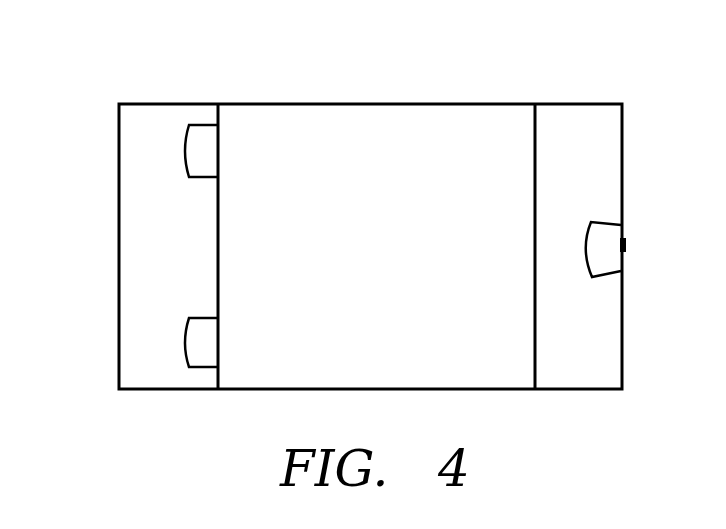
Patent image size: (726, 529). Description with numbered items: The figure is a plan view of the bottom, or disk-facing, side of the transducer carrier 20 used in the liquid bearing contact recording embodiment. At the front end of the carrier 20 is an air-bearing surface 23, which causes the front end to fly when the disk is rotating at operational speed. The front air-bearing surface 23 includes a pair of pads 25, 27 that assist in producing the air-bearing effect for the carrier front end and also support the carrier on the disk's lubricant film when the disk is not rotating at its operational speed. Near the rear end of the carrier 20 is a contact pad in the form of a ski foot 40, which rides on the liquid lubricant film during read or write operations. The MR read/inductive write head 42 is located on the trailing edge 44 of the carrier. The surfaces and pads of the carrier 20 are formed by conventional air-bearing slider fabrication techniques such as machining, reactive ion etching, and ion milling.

The transducer carrier 20 is at (557, 76).
The air-bearing surface 23 is at (131, 246).
The pad 25 is at (197, 360).
The pad 27 is at (203, 128).
The ski foot 40 is at (598, 232).
The MR read/inductive write head 42 is at (626, 248).
The trailing edge 44 is at (622, 340).